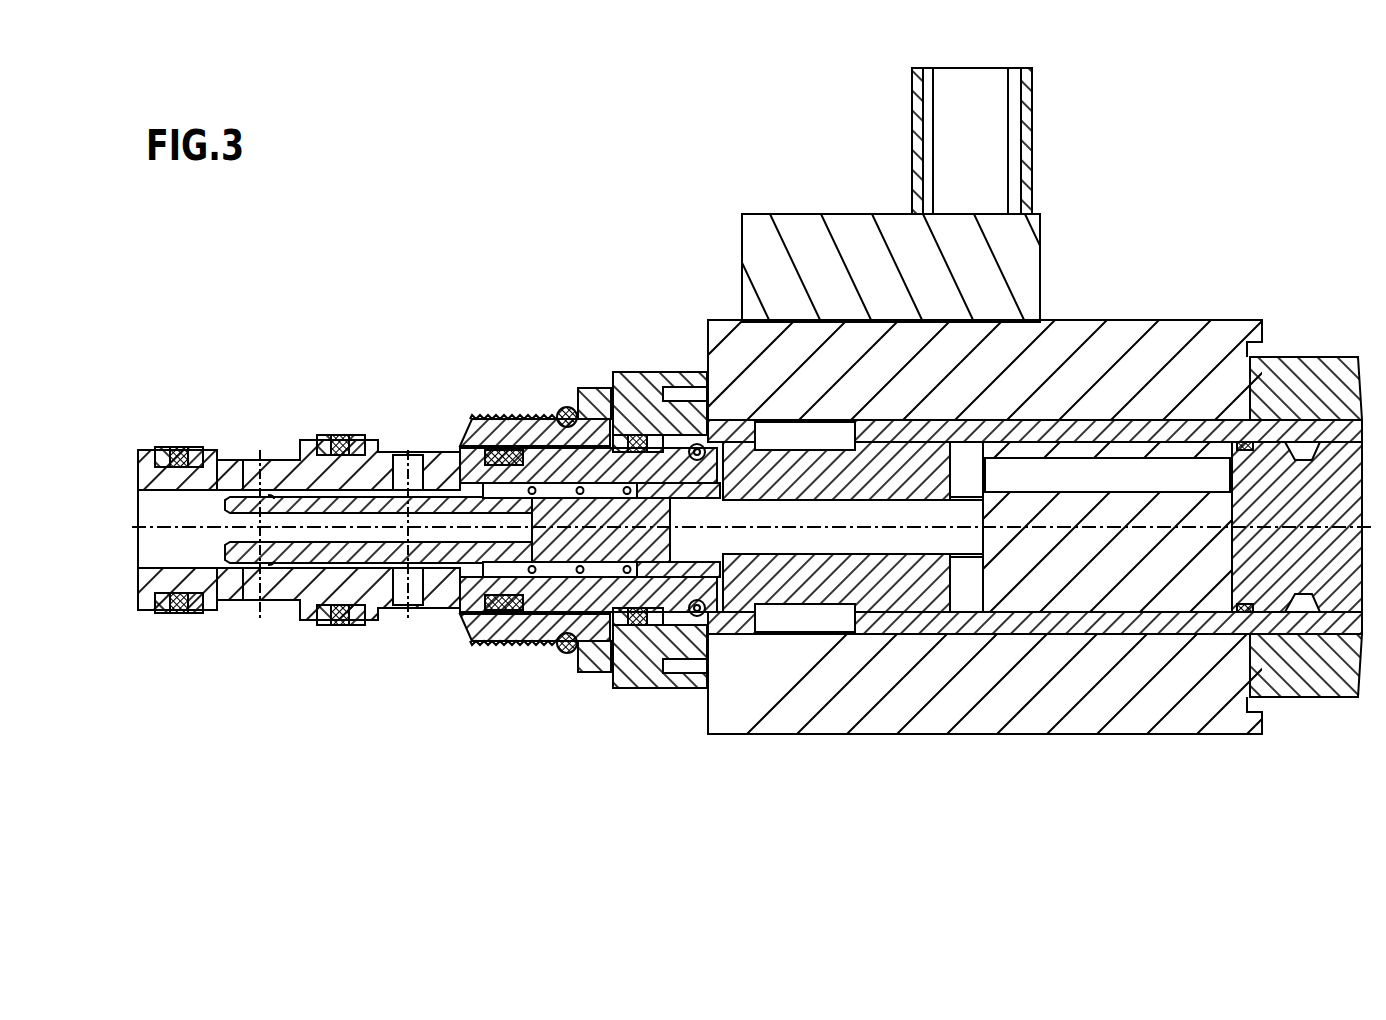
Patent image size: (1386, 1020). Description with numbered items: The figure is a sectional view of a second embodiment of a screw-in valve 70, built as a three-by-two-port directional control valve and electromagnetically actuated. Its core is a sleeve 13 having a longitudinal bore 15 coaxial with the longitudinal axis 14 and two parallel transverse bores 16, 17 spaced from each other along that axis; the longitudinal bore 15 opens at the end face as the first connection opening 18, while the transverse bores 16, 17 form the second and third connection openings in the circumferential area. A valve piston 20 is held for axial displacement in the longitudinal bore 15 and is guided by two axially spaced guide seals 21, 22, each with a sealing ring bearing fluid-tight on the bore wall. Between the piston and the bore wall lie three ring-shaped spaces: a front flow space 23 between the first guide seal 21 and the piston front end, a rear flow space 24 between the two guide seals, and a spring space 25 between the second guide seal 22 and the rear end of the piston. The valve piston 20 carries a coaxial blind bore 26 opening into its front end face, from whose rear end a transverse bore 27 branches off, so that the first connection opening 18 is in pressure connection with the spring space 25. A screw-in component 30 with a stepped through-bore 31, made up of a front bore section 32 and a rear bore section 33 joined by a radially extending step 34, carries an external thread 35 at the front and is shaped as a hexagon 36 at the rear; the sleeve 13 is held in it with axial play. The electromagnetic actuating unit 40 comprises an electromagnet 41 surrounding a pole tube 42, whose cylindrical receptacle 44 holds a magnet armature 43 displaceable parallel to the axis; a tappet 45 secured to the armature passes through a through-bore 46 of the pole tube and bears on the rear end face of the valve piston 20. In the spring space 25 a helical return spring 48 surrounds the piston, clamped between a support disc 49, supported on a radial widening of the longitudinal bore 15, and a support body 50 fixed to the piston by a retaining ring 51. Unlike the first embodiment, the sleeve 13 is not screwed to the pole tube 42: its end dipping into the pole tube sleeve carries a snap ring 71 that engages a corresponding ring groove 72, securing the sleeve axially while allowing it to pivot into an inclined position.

The sleeve 13 is at (368, 425).
The longitudinal axis 14 is at (136, 527).
The longitudinal bore 15 is at (138, 566).
The transverse bore 16 is at (250, 612).
The transverse bore 17 is at (398, 604).
The first connection opening 18 is at (138, 494).
The valve piston 20 is at (302, 566).
The first guide seal 21 is at (262, 492).
The second guide seal 22 is at (450, 492).
The front flow space 23 is at (215, 606).
The rear flow space 24 is at (350, 566).
The spring space 25 is at (526, 564).
The blind bore 26 is at (214, 450).
The transverse bore 27 is at (542, 470).
The screw-in component 30 is at (590, 388).
The stepped through-bore 31 is at (445, 600).
The front bore section 32 is at (598, 672).
The rear bore section 33 is at (664, 678).
The step 34 is at (650, 420).
The external thread 35 is at (496, 448).
The hexagon 36 is at (685, 387).
The electromagnetic actuating unit 40 is at (1138, 312).
The electromagnet 41 is at (1212, 336).
The pole tube 42 is at (1020, 408).
The magnet armature 43 is at (1110, 572).
The cylindrical receptacle 44 is at (965, 605).
The tappet 45 is at (795, 556).
The through-bore 46 is at (870, 545).
The helical return spring 48 is at (566, 654).
The support disc 49 is at (496, 604).
The support body 50 is at (715, 480).
The retaining ring 51 is at (660, 496).
The screw-in valve 70 is at (1118, 178).
The snap ring 71 is at (708, 452).
The ring groove 72 is at (760, 636).